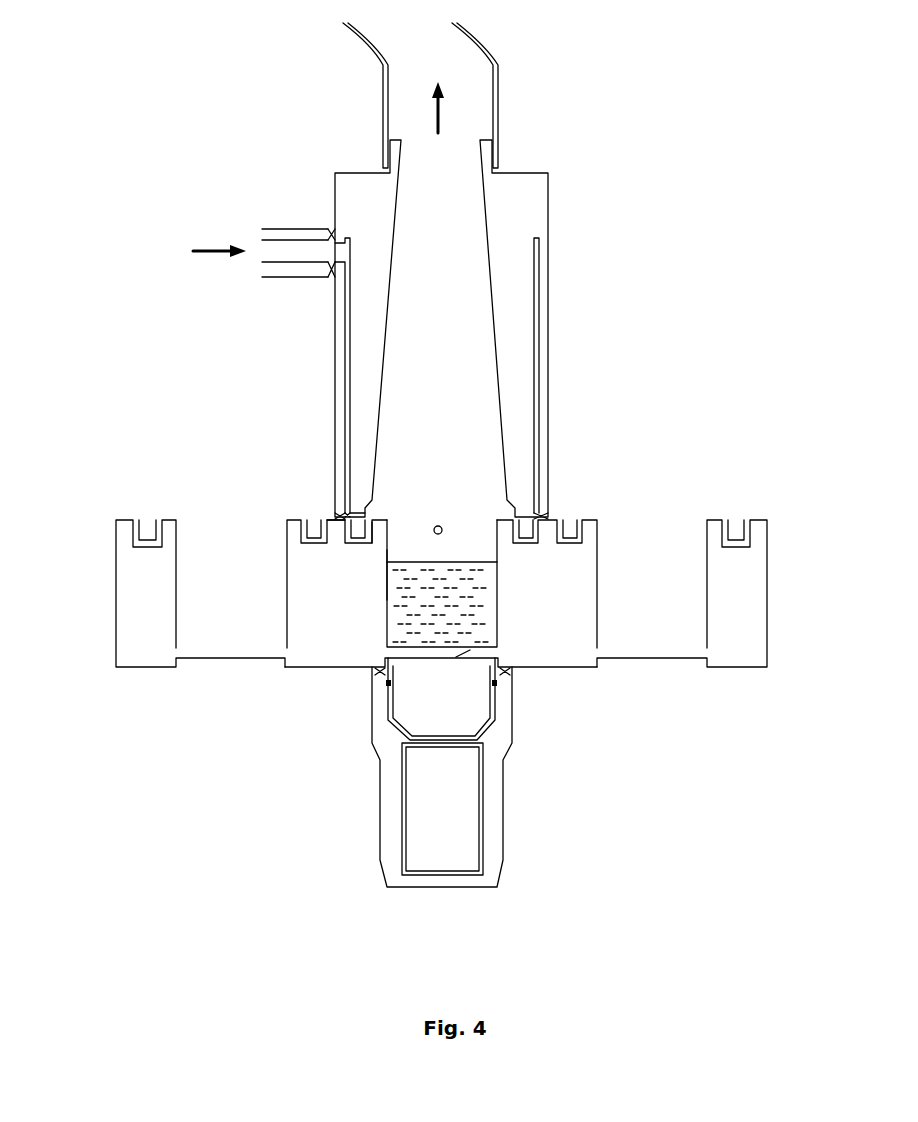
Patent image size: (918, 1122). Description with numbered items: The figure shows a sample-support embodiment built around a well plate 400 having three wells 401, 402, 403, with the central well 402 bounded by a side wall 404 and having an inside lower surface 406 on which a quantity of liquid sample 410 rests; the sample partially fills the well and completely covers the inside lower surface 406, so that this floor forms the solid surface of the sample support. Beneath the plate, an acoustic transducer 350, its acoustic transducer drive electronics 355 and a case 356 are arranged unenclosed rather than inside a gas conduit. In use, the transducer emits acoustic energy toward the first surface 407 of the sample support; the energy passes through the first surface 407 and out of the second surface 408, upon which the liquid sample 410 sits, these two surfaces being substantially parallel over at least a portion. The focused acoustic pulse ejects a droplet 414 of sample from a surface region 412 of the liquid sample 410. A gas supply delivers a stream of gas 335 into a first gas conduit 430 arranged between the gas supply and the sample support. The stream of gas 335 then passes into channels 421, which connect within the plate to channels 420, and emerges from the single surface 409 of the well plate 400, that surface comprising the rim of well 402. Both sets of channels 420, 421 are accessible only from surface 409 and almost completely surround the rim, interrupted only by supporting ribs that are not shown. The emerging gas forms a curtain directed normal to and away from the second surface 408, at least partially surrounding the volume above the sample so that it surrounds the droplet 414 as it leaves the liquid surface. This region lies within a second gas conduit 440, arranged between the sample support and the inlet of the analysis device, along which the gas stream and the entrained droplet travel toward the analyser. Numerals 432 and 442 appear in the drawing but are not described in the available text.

The well plate 400 is at (143, 497).
The well 401 is at (167, 642).
The well 402 is at (505, 655).
The well 403 is at (717, 647).
The side wall 404 is at (370, 570).
The inside lower surface 406 is at (472, 645).
The first surface 407 is at (503, 672).
The second surface 408 is at (462, 647).
The surface 409 is at (330, 520).
The liquid sample 410 is at (467, 592).
The surface region 412 is at (443, 563).
The droplet 414 is at (434, 527).
The channels 420 is at (368, 540).
The channels 421 is at (352, 543).
The first gas conduit 430 is at (345, 383).
The nozzle fitting 432 is at (337, 517).
The second gas conduit 440 is at (355, 227).
The nozzle outlet 442 is at (345, 513).
The stream of gas 335 is at (440, 117).
The acoustic transducer 350 is at (482, 713).
The acoustic transducer drive electronics 355 is at (465, 808).
The case 356 is at (485, 882).